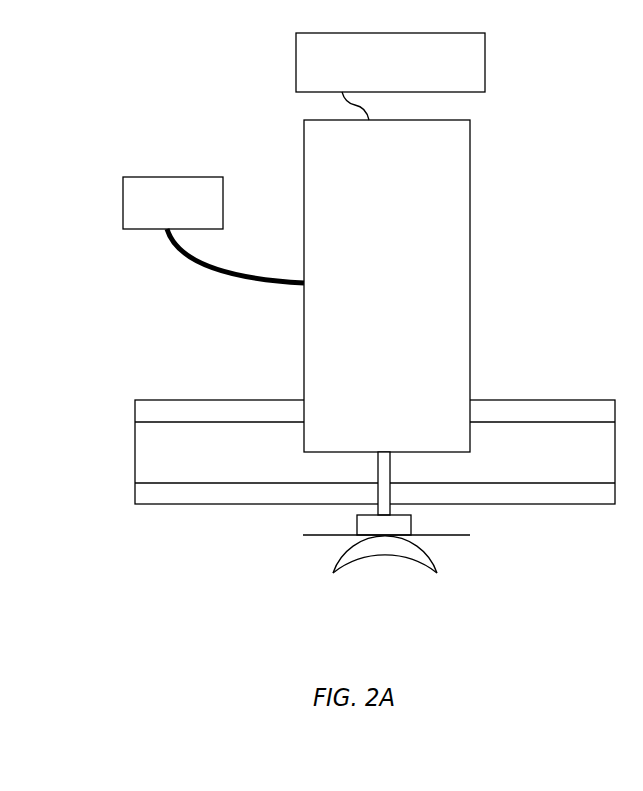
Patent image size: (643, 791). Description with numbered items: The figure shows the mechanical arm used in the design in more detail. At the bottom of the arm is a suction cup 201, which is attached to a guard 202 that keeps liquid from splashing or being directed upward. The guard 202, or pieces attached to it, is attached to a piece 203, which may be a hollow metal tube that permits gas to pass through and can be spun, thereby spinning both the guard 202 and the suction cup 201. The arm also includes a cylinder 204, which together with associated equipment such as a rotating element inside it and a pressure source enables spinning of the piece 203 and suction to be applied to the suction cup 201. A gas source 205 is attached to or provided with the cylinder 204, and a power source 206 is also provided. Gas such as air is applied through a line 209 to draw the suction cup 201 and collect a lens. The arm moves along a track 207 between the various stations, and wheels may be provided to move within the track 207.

The suction cup 201 is at (345, 589).
The guard 202 is at (460, 549).
The piece 203 is at (400, 468).
The cylinder 204 is at (387, 286).
The gas source 205 is at (173, 203).
The power source 206 is at (390, 76).
The track 207 is at (375, 452).
The line 209 is at (238, 300).